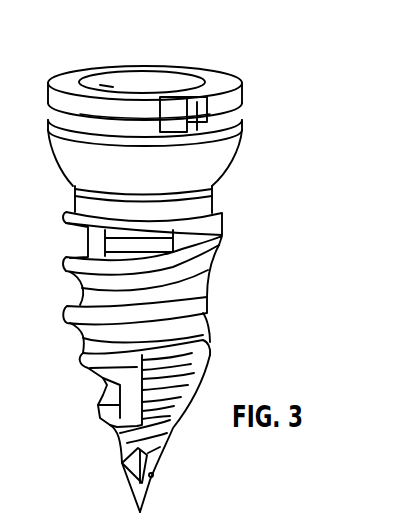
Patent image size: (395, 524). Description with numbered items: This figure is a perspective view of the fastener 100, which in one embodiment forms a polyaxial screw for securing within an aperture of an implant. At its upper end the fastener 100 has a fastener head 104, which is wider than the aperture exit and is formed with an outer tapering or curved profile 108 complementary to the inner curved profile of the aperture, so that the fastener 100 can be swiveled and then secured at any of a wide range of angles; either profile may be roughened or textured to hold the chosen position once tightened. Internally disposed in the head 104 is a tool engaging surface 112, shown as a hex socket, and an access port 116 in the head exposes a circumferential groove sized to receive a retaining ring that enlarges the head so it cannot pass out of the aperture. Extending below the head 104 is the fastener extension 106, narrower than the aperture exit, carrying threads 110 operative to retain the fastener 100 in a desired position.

The fastener 100 is at (394, 478).
The fastener head 104 is at (242, 63).
The fastener extension 106 is at (242, 262).
The outer tapering or curved profile 108 is at (255, 78).
The threads 110 is at (216, 297).
The tool engaging surface 112 is at (150, 89).
The access port 116 is at (182, 108).